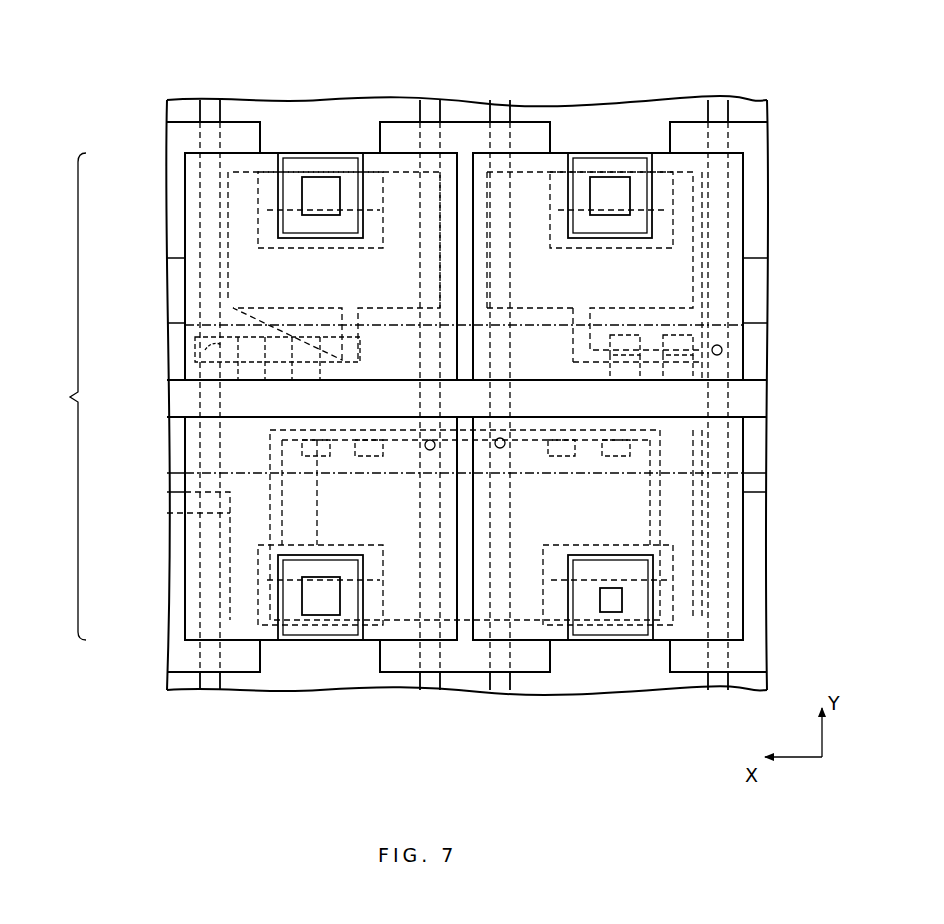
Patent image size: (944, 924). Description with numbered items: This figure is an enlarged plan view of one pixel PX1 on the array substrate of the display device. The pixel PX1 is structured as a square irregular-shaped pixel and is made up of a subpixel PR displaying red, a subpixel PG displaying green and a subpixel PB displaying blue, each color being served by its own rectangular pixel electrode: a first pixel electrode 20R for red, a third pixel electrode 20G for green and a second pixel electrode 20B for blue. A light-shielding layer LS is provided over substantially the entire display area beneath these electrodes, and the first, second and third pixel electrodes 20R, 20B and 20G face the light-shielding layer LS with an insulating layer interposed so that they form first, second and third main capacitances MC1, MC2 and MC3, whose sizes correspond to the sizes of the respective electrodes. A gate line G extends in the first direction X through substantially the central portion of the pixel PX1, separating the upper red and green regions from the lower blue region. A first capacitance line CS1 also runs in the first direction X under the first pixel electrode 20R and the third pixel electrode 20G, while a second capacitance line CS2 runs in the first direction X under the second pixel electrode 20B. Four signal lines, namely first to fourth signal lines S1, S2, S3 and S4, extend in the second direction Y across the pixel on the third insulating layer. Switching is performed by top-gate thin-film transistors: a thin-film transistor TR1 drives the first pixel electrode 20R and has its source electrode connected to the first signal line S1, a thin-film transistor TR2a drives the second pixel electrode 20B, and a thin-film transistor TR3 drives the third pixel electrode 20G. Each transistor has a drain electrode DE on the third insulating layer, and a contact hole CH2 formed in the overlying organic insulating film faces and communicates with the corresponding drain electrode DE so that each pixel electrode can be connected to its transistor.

The first signal line S1 is at (212, 107).
The second signal line S2 is at (432, 107).
The third signal line S3 is at (503, 107).
The fourth signal line S4 is at (719, 107).
The contact hole CH2 is at (310, 160).
The drain electrode DE is at (378, 175).
The light-shielding layer LS is at (755, 153).
The subpixel displaying red PR is at (192, 208).
The subpixel displaying green PG is at (735, 208).
The subpixel displaying blue PB is at (685, 495).
The first pixel electrode 20R is at (182, 233).
The third pixel electrode 20G is at (750, 233).
The second pixel electrode 20B is at (750, 562).
The first capacitance line CS1 is at (178, 290).
The second capacitance line CS2 is at (178, 492).
The first main capacitance MC1 is at (183, 298).
The second main capacitance MC2 is at (747, 520).
The third main capacitance MC3 is at (747, 297).
The thin-film transistor TR1 is at (275, 338).
The thin-film transistor TR2a is at (345, 463).
The thin-film transistor TR3 is at (655, 340).
The gate line G is at (183, 408).
The pixel PX1 is at (54, 396).